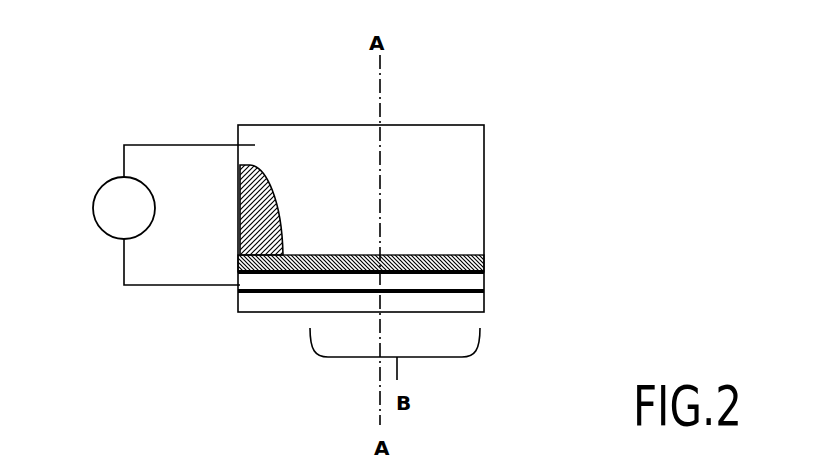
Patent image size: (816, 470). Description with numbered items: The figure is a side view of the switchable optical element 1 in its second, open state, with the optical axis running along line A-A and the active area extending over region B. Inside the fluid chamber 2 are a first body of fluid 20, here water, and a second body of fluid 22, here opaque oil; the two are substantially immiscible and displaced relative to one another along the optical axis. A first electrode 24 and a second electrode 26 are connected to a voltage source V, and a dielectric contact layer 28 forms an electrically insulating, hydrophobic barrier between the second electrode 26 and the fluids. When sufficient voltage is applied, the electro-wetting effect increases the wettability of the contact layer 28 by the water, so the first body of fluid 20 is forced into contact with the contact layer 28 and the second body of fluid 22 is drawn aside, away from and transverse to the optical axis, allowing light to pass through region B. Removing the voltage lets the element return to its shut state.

The switchable optical element 1 is at (289, 101).
The fluid chamber 2 is at (357, 230).
The first body of fluid 20 is at (468, 152).
The second body of fluid 22 is at (238, 247).
The first electrode 24 is at (212, 143).
The second electrode 26 is at (238, 293).
The dielectric contact layer 28 is at (485, 265).